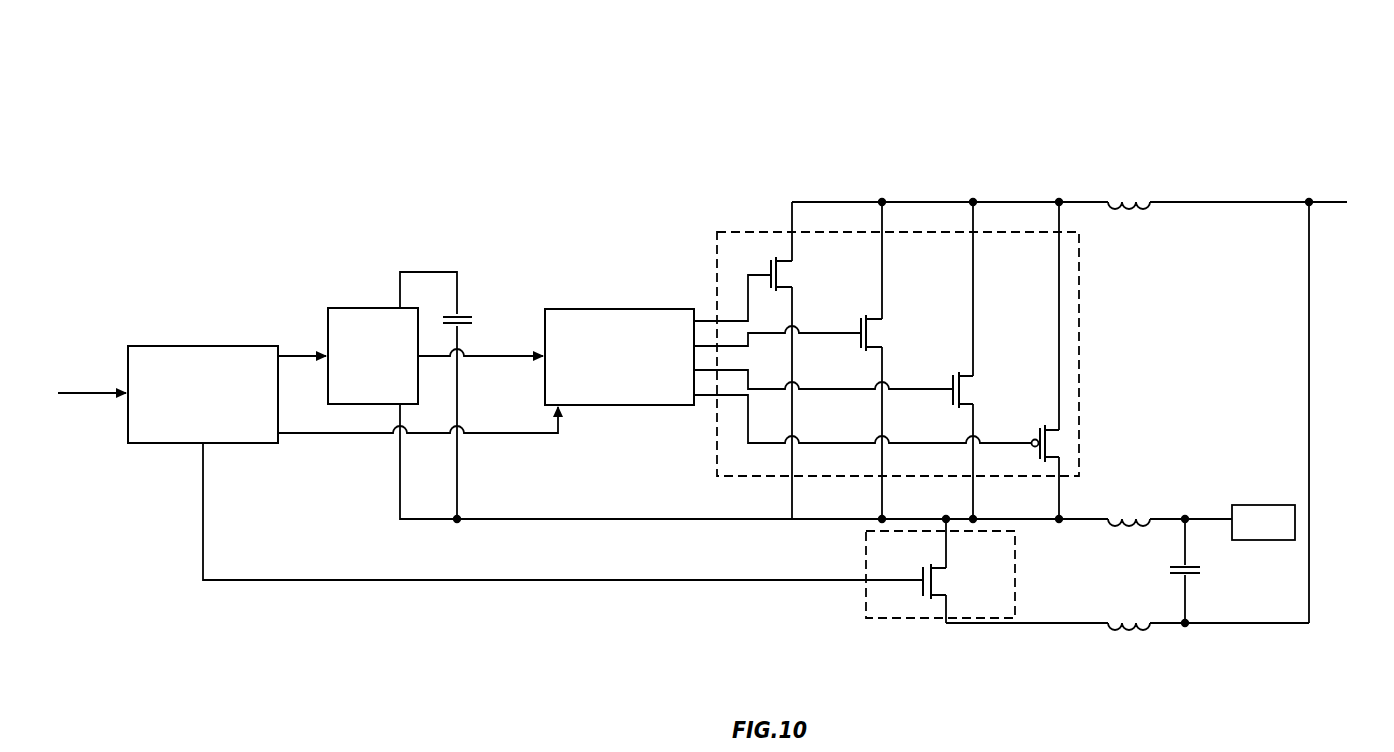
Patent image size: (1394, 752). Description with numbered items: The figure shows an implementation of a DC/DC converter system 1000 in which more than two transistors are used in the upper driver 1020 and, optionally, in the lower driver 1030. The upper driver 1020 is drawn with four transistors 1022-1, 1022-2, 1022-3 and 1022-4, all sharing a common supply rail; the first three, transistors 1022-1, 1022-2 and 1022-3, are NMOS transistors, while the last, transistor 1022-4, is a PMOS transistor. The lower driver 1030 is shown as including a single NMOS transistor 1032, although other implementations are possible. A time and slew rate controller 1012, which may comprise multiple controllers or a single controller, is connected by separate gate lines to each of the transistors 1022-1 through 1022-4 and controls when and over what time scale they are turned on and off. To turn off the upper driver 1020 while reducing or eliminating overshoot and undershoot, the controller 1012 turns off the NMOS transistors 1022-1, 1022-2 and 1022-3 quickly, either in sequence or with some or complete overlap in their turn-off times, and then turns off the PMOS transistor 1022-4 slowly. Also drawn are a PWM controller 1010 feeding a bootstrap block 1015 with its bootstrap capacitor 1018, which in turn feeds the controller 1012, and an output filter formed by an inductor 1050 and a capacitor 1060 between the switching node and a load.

The system 1000 is at (372, 94).
The PWM controller 1010 is at (158, 346).
The time and slew rate controller 1012 is at (614, 309).
The bootstrap circuit 1015 is at (348, 308).
The bootstrap capacitor CBS 1018 is at (462, 312).
The upper driver 1020 is at (1079, 345).
The transistor 1022-1 is at (770, 250).
The transistor 1022-2 is at (846, 310).
The transistor 1022-3 is at (940, 370).
The transistor 1022-4 is at (1030, 418).
The lower driver 1030 is at (866, 580).
The NMOS transistor 1032 is at (978, 565).
The inductor LX 1050 is at (1132, 529).
The capacitor CX 1060 is at (1178, 578).